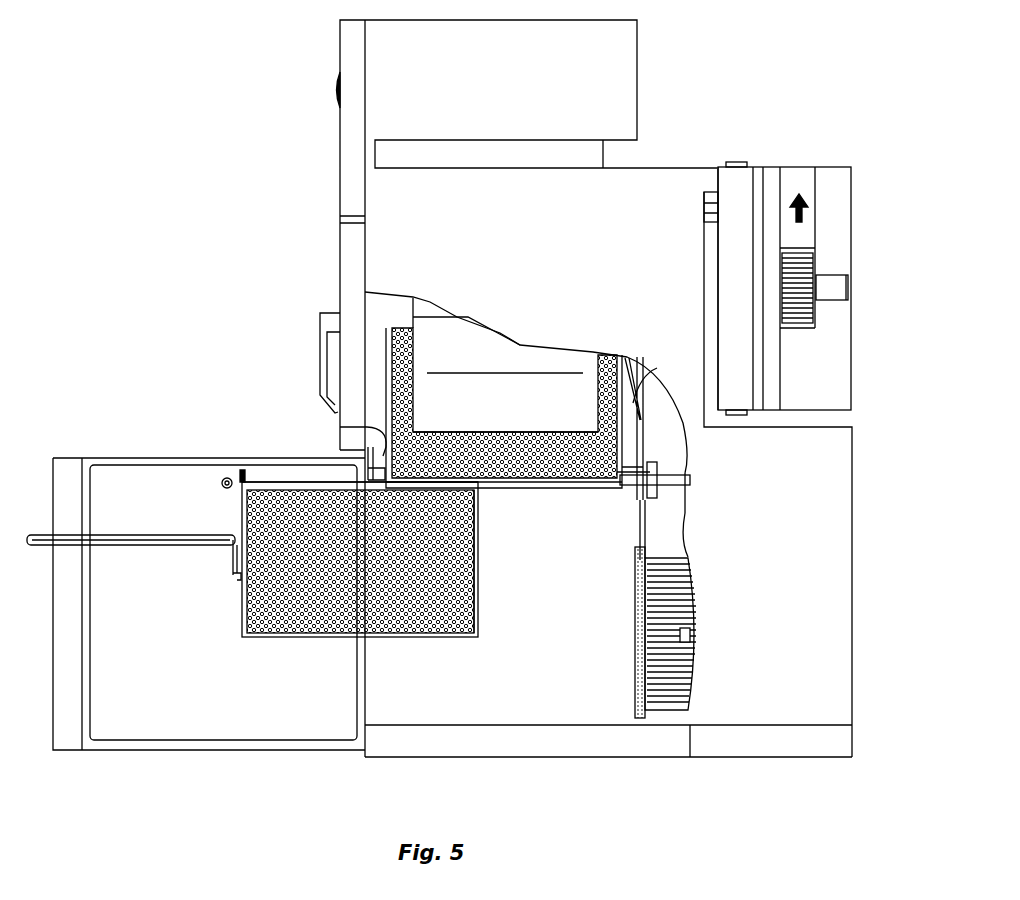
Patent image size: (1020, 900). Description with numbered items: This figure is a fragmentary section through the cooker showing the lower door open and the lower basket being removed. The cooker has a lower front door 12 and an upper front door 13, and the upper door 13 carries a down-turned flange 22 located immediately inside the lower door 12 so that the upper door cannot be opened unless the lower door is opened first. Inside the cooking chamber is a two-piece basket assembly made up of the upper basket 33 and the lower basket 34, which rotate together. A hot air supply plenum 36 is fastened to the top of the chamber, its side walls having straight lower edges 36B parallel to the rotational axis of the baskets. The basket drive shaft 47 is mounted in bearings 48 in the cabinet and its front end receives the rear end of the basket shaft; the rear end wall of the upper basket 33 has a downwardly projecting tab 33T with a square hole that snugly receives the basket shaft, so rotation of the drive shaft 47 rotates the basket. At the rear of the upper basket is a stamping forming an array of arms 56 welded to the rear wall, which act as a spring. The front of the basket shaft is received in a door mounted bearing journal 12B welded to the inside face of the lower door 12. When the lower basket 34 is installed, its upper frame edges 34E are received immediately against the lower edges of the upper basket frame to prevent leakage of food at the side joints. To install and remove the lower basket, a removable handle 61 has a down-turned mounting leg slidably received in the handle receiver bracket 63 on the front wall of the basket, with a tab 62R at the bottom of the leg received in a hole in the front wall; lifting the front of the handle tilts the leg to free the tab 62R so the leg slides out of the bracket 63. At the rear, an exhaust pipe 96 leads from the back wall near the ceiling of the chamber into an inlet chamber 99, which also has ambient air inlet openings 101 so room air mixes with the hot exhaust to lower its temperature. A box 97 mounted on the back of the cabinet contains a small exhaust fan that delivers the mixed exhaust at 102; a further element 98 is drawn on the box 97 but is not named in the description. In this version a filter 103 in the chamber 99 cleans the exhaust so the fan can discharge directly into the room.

The lower front door 12 is at (105, 465).
The door mounted bearing journal 12B is at (223, 478).
The upper front door 13 is at (352, 272).
The down-turned flange 22 is at (363, 425).
The upper basket 33 is at (500, 470).
The downwardly projecting tab 33T is at (625, 498).
The lower basket 34 is at (470, 585).
The upper edges of lower basket frame 34E is at (268, 483).
The hot air supply plenum 36 is at (481, 362).
The lower edges of plenum side walls 36B is at (460, 447).
The basket drive shaft 47 is at (678, 473).
The bearings 48 is at (655, 515).
The arms 56 is at (640, 400).
The removable handle 61 is at (45, 548).
The tab 62R is at (238, 587).
The handle receiver bracket 63 is at (233, 565).
The exhaust pipe 96 is at (708, 192).
The box 97 is at (842, 167).
The thumb wheel 98 is at (816, 258).
The inlet chamber 99 is at (740, 293).
The ambient air inlet openings 101 is at (737, 162).
The fan delivery outlet 102 is at (808, 168).
The filter 103 is at (758, 168).